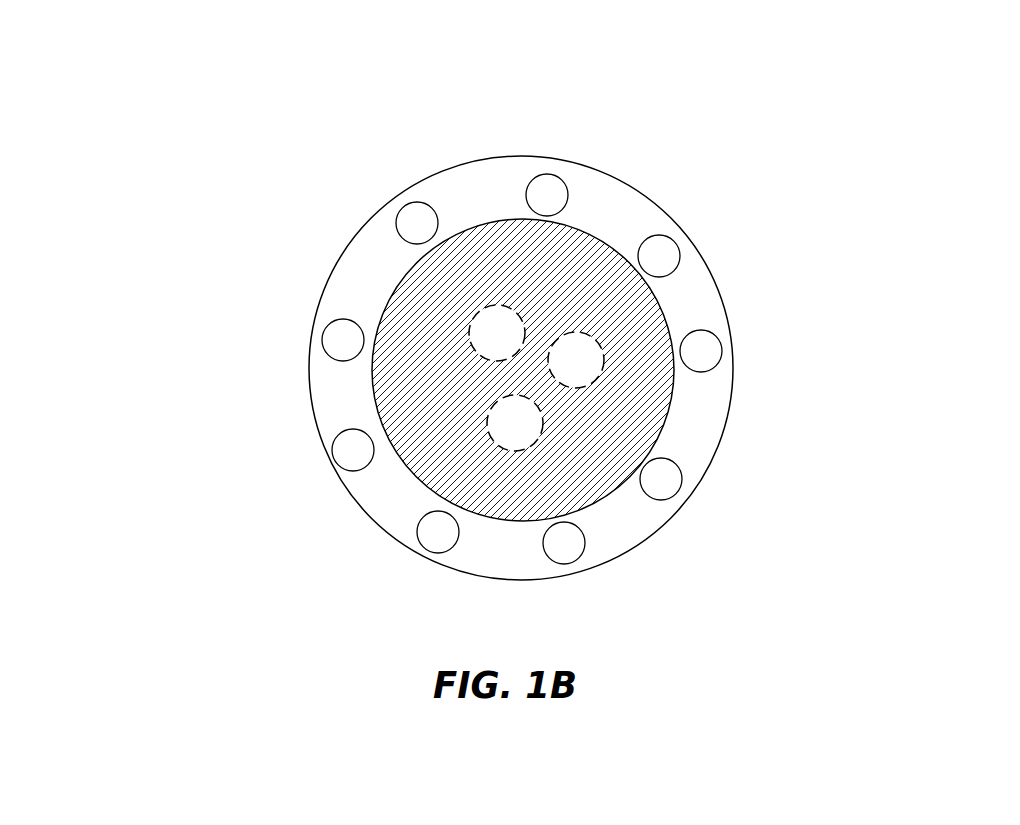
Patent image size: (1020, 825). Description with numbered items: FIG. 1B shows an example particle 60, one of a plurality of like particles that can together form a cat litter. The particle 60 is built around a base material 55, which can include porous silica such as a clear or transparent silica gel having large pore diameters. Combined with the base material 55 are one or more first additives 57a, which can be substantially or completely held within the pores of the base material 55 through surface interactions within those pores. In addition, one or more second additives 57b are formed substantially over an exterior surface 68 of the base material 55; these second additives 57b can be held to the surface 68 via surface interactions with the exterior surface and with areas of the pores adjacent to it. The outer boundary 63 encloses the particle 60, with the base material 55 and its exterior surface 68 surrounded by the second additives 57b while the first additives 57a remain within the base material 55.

The particle 60 is at (646, 118).
The base material 55 is at (583, 268).
The first additives 57a is at (528, 325).
The second additives 57b is at (398, 215).
The outer jacket 63 is at (310, 392).
The exterior surface 68 is at (665, 425).